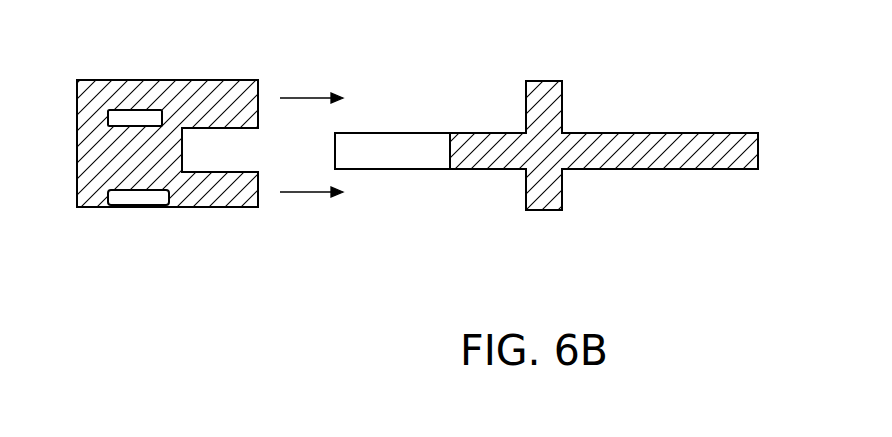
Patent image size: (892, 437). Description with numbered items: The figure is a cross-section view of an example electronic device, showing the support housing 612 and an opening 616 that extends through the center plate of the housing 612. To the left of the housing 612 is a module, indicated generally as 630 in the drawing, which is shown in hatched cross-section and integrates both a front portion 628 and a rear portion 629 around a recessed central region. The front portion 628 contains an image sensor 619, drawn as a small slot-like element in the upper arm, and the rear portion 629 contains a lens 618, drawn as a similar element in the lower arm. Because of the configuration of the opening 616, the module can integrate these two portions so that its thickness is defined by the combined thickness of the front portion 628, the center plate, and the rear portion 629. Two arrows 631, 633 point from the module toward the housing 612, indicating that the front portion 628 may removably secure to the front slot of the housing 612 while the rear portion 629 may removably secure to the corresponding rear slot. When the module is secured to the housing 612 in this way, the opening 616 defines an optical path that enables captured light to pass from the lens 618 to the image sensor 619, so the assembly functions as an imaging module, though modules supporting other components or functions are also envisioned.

The shaft coupling body 630 is at (132, 66).
The front portion 628 is at (226, 89).
The rear portion 629 is at (218, 200).
The image sensor 619 is at (113, 118).
The lens 618 is at (138, 198).
The arrow 631 is at (302, 98).
The arrow 633 is at (318, 192).
The opening 616 is at (413, 153).
The support housing 612 is at (548, 84).